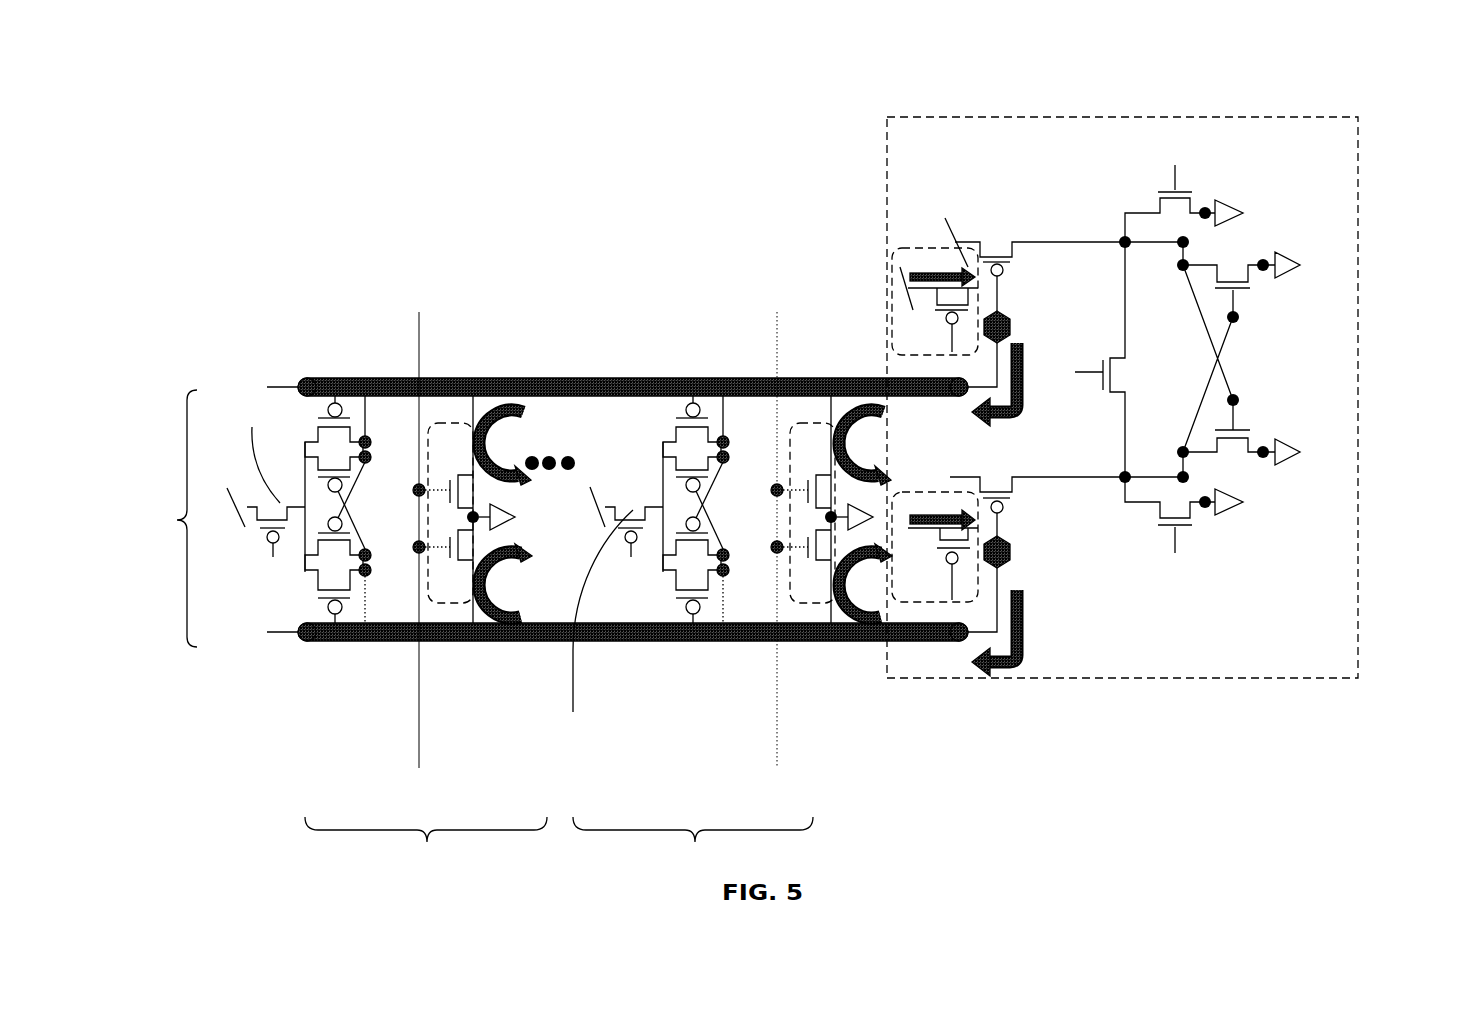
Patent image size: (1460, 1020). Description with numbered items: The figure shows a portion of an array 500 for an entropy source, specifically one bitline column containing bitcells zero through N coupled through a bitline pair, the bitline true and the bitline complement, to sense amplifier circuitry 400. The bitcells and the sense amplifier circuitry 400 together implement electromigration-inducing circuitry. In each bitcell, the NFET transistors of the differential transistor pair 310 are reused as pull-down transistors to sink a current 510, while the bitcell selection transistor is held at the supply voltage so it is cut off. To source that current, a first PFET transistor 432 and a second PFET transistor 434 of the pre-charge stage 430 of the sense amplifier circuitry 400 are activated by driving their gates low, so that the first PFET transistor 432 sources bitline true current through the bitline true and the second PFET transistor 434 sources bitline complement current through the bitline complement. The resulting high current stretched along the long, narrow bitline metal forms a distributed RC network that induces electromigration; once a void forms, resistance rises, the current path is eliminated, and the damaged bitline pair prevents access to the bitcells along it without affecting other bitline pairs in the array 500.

The array 500 is at (1368, 109).
The sense amplifier circuitry 400 is at (1358, 415).
The differential transistor pair 310 is at (443, 418).
The current 510 is at (485, 417).
The PFET transistor 432 is at (952, 298).
The pre-charge stage 430 is at (912, 602).
The PFET transistor 434 is at (945, 540).